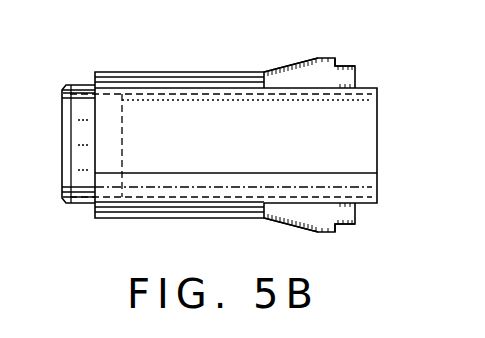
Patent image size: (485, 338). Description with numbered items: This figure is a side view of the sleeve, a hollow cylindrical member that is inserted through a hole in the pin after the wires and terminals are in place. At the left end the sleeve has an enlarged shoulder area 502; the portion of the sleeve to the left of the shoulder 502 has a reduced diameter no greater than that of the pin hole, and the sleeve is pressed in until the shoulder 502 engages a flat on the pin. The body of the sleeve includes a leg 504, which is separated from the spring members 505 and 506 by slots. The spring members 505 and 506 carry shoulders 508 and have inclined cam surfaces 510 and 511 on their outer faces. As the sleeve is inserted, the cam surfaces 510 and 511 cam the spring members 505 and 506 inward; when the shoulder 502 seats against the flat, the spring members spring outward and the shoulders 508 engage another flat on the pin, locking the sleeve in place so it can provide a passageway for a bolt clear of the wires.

The shoulder area 502 is at (95, 112).
The leg 504 is at (360, 133).
The spring member 505 is at (313, 70).
The spring member 506 is at (320, 228).
The shoulder 508 is at (339, 60).
The cam surface 510 is at (287, 67).
The cam surface 511 is at (292, 228).